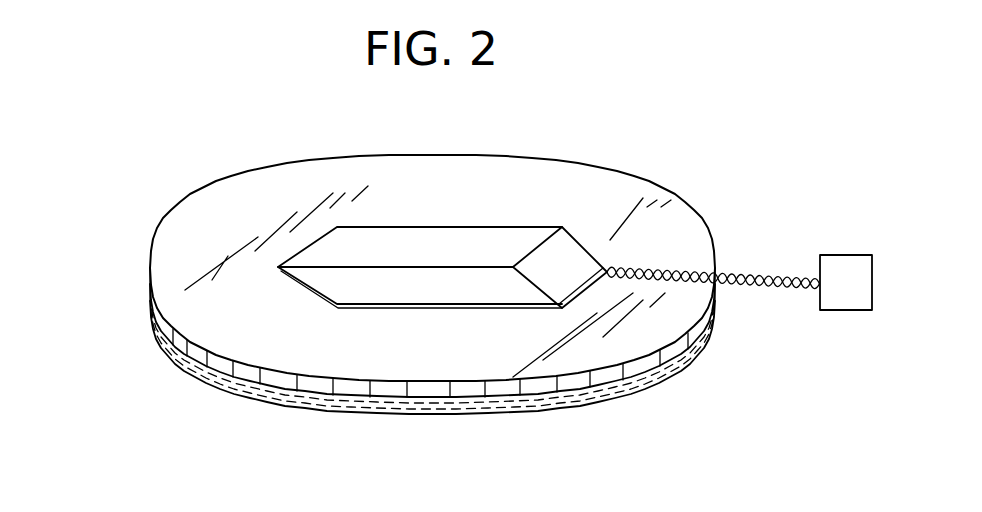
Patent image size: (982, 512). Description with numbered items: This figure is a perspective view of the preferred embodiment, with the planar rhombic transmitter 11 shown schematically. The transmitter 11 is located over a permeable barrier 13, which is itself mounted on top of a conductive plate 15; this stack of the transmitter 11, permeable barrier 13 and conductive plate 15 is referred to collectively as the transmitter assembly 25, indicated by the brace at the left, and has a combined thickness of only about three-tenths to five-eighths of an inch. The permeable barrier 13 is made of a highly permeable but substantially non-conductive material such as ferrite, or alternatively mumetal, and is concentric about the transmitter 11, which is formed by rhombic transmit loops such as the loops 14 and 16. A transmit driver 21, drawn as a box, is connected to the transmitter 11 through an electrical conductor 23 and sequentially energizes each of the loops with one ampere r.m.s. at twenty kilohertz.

The planar rhombic transmitter 11 is at (562, 257).
The permeable barrier 13 is at (680, 245).
The rhombic transmit loop 14 is at (508, 265).
The conductive plate 15 is at (260, 394).
The rhombic transmit loop 16 is at (470, 245).
The transmit driver 21 is at (834, 298).
The electrical conductor 23 is at (770, 288).
The transmitter assembly 25 is at (138, 140).